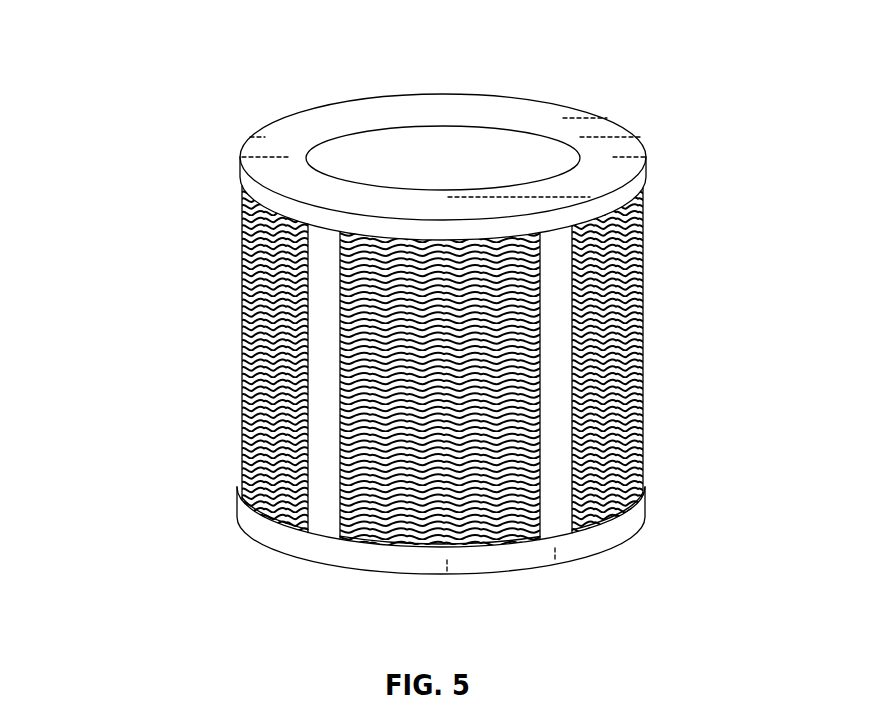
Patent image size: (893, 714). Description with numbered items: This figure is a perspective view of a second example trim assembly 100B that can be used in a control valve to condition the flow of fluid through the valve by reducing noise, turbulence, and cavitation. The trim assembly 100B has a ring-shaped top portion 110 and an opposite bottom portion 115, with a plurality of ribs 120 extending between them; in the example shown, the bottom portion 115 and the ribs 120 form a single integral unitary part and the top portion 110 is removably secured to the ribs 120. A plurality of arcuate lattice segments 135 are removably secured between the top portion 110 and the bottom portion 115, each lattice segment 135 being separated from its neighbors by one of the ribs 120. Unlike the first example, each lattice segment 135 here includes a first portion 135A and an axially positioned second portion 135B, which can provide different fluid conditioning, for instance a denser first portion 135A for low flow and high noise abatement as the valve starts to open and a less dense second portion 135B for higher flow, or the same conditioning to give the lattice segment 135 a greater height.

The second example trim assembly 100B is at (170, 56).
The top portion 110 is at (250, 151).
The bottom portion 115 is at (412, 560).
The ribs 120 is at (333, 162).
The arcuate lattice segments 135 is at (445, 336).
The first portion 135A is at (257, 442).
The second portion 135B is at (462, 147).